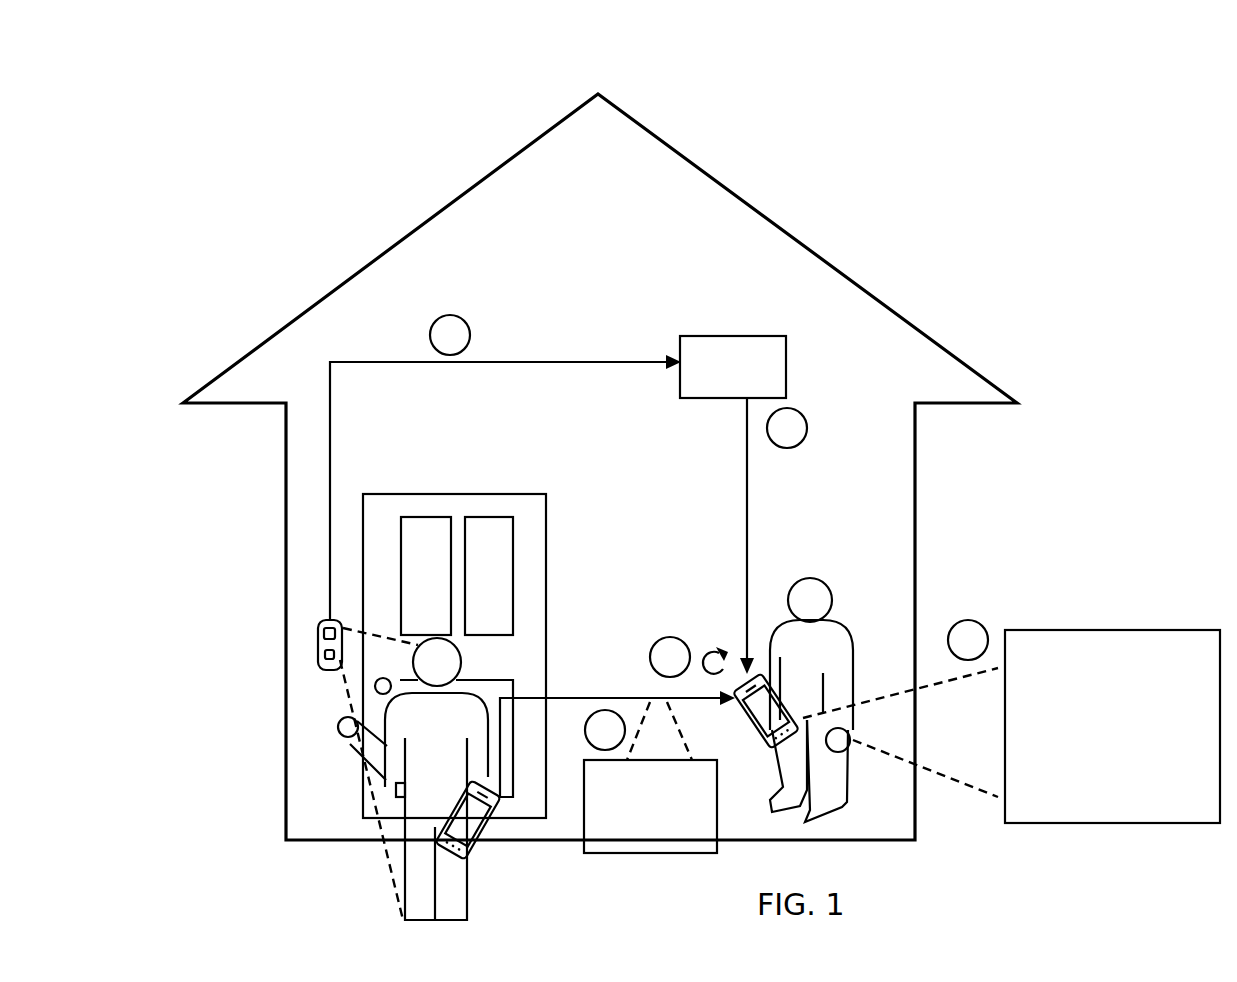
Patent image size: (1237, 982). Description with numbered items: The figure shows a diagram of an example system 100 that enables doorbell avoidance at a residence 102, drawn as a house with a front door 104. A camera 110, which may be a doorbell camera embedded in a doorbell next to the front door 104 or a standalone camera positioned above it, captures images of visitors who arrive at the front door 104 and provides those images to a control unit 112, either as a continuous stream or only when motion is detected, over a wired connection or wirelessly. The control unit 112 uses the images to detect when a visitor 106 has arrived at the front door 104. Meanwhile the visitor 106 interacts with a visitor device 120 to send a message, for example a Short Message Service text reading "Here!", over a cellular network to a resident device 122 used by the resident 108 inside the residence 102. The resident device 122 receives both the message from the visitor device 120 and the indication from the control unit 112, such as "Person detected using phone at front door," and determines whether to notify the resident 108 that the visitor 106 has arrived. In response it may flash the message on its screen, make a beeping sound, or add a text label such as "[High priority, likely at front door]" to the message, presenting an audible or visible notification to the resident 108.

The system 100 is at (531, 50).
The residence 102 is at (381, 254).
The front door 104 is at (548, 542).
The visitor 106 is at (350, 720).
The resident 108 is at (812, 578).
The camera 110 is at (318, 648).
The control unit 112 is at (733, 367).
The visitor device 120 is at (490, 850).
The resident device 122 is at (755, 732).